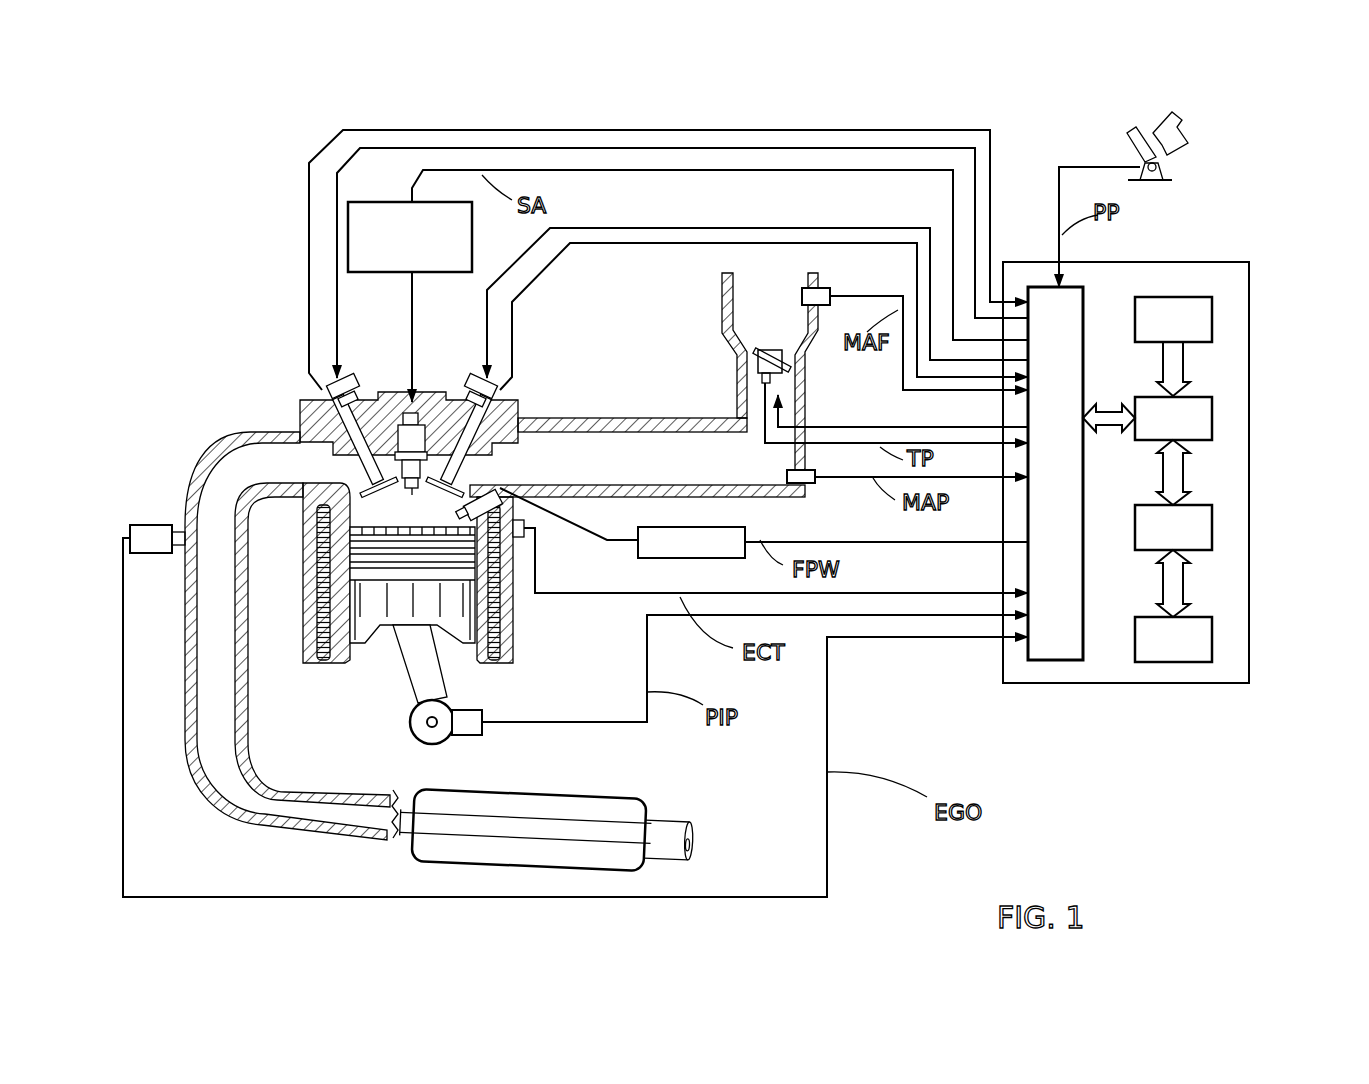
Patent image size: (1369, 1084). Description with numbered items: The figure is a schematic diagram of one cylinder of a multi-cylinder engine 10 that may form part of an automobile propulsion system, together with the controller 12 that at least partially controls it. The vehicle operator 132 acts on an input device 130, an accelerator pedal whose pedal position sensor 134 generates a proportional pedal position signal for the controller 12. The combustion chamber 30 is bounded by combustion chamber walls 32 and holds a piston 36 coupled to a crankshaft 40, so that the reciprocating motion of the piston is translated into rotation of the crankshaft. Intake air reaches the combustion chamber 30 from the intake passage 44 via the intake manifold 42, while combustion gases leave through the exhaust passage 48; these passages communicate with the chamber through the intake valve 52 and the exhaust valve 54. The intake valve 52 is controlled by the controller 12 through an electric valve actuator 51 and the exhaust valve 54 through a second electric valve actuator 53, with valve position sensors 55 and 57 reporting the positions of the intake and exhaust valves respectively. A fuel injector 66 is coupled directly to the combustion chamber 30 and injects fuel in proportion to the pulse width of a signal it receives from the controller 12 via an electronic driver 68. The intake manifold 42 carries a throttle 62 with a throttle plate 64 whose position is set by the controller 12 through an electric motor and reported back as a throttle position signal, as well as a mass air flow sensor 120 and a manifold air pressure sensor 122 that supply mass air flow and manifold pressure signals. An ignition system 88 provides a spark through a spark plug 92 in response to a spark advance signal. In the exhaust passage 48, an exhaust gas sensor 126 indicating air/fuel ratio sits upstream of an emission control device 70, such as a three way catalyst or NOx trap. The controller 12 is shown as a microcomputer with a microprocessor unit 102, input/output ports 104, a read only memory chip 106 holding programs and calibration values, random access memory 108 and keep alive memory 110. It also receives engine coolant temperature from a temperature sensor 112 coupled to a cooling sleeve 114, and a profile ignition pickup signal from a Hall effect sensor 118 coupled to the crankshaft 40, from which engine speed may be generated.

The engine 10 is at (228, 348).
The controller 12 is at (1240, 262).
The combustion chamber 30 is at (407, 502).
The combustion chamber walls 32 is at (348, 655).
The piston 36 is at (392, 614).
The crankshaft 40 is at (422, 742).
The intake manifold 42 is at (786, 324).
The intake passage 44 is at (718, 473).
The exhaust passage 48 is at (285, 475).
The electric valve actuator 51 is at (472, 378).
The intake valve 52 is at (460, 467).
The electric valve actuator 53 is at (345, 378).
The exhaust valve 54 is at (297, 430).
The valve position sensor 55 is at (498, 386).
The valve position sensor 57 is at (323, 388).
The throttle 62 is at (785, 358).
The throttle plate 64 is at (752, 356).
The fuel injector 66 is at (507, 505).
The electronic driver 68 is at (668, 558).
The emission control device 70 is at (604, 797).
The ignition system 88 is at (365, 202).
The spark plug 92 is at (418, 413).
The microprocessor unit 102 is at (1212, 412).
The input/output ports 104 is at (1083, 295).
The read only memory chip 106 is at (1212, 318).
The random access memory 108 is at (1212, 525).
The keep alive memory 110 is at (1212, 637).
The temperature sensor 112 is at (524, 533).
The cooling sleeve 114 is at (500, 613).
The Hall effect sensor 118 is at (472, 735).
The mass air flow sensor 120 is at (822, 289).
The manifold air pressure sensor 122 is at (810, 483).
The exhaust gas sensor 126 is at (128, 527).
The input device 130 is at (1128, 143).
The vehicle operator 132 is at (1180, 130).
The pedal position sensor 134 is at (1165, 170).